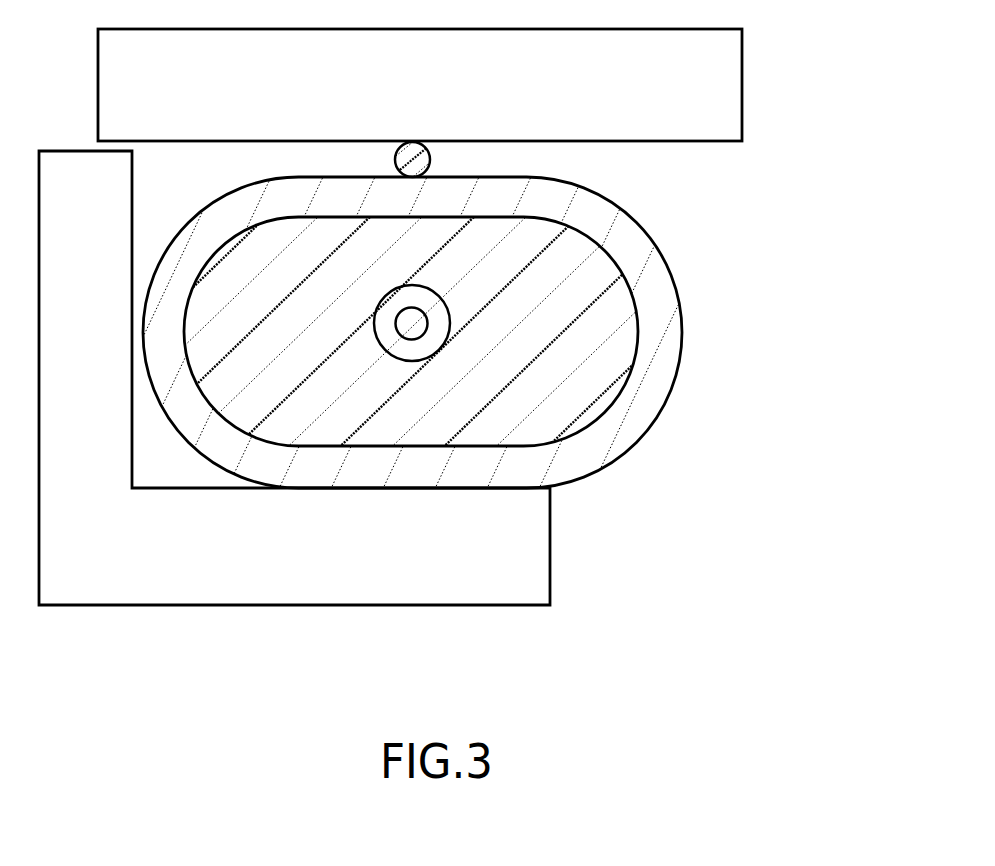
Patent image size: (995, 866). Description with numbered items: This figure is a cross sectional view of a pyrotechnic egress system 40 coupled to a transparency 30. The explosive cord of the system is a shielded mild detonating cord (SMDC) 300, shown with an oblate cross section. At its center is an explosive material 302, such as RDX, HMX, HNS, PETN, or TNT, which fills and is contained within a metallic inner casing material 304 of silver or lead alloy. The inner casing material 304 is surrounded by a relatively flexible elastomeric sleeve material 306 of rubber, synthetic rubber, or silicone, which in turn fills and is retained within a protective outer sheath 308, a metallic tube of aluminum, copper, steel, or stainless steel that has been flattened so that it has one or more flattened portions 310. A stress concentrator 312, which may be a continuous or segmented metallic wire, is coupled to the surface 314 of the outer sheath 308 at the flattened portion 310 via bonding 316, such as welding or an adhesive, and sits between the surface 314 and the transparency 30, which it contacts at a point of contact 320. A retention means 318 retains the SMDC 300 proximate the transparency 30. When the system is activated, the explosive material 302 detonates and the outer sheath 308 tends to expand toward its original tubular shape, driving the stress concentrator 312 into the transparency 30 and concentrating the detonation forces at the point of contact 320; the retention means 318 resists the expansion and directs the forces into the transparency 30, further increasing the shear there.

The transparency 30 is at (636, 88).
The pyrotechnic egress system 40 is at (476, 317).
The shielded mild detonating cord 300 is at (476, 357).
The explosive material 302 is at (408, 329).
The inner casing material 304 is at (435, 343).
The elastomeric sleeve material 306 is at (542, 326).
The outer sheath 308 is at (550, 462).
The flattened portion 310 is at (518, 184).
The stress concentrator 312 is at (404, 120).
The surface 314 is at (634, 219).
The bonding 316 is at (396, 173).
The retention means 318 is at (123, 551).
The point of contact 320 is at (407, 143).